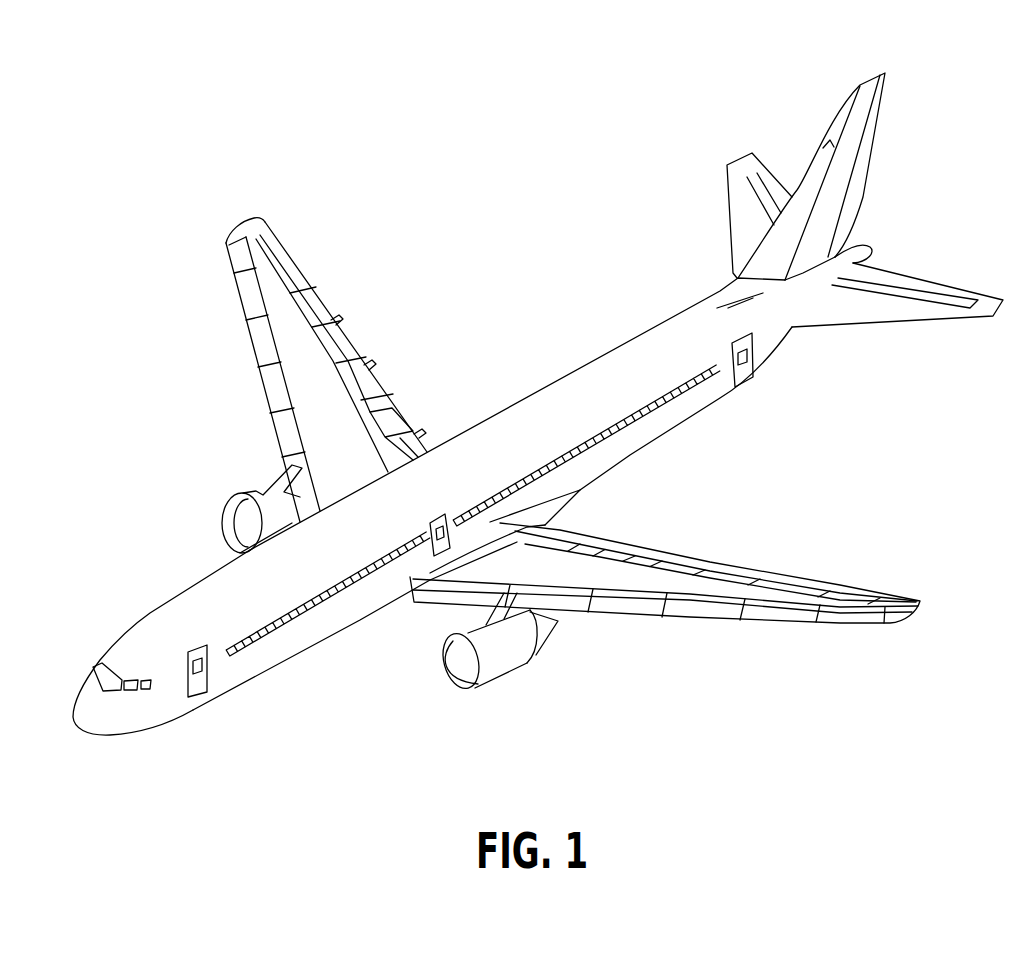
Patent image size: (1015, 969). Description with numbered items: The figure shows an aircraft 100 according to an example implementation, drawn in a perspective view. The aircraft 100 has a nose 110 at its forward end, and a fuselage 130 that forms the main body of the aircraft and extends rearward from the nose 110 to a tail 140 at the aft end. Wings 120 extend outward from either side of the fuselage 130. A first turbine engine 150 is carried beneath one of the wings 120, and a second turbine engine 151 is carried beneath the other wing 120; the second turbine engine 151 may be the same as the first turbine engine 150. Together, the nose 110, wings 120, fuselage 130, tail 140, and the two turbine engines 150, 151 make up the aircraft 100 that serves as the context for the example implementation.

The aircraft 100 is at (471, 320).
The nose 110 is at (98, 736).
The wings 120 is at (256, 219).
The fuselage 130 is at (630, 453).
The tail 140 is at (885, 88).
The first turbine engine 150 is at (232, 500).
The second turbine engine 151 is at (497, 668).